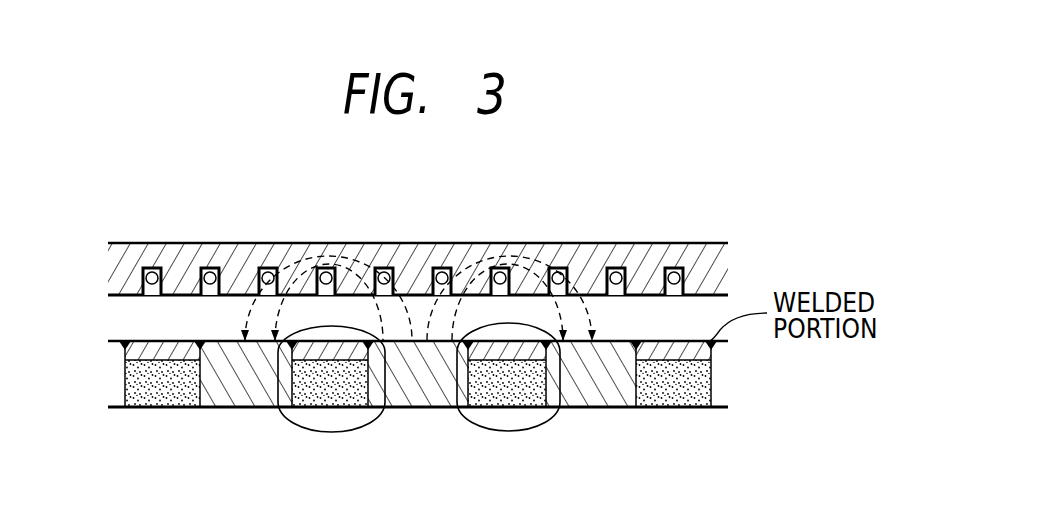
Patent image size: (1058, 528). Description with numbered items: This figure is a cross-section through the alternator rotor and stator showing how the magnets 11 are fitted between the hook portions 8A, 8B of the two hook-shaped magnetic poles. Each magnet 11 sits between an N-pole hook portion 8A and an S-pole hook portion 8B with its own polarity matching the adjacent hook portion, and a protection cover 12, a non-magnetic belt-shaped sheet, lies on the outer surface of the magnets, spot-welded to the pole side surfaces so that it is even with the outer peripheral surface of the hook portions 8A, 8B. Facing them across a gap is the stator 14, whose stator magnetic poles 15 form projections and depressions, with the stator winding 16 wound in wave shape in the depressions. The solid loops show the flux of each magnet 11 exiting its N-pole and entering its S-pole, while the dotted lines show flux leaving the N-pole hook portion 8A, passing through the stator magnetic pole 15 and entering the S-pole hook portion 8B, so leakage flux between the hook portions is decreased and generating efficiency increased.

The hook portion 8A is at (427, 408).
The hook portion 8B is at (262, 408).
The magnet 11 is at (163, 408).
The protection cover 12 is at (150, 341).
The stator 14 is at (697, 243).
The stator magnetic pole 15 is at (589, 285).
The stator winding 16 is at (444, 271).